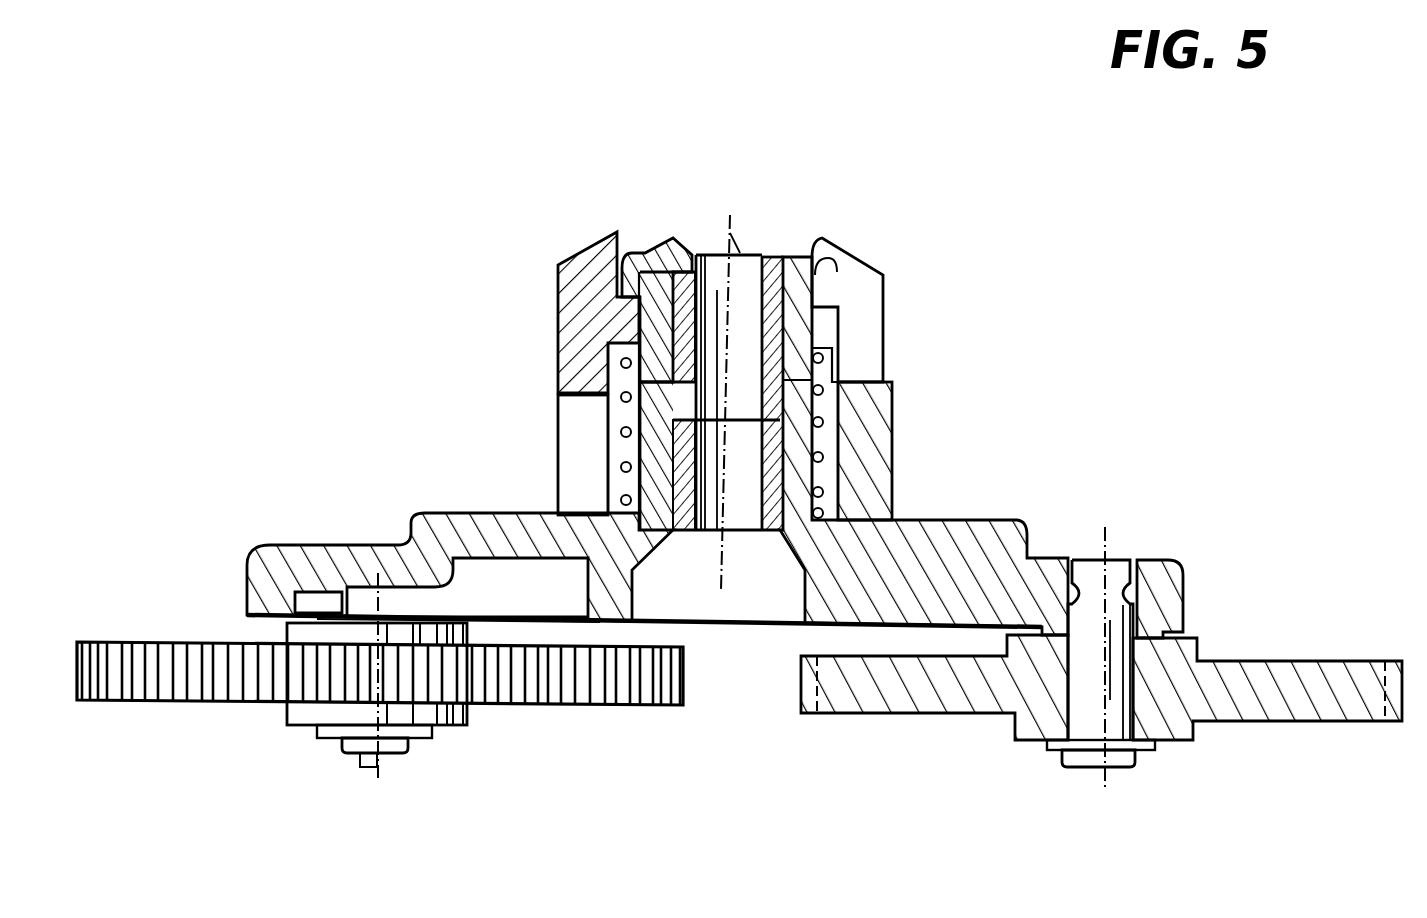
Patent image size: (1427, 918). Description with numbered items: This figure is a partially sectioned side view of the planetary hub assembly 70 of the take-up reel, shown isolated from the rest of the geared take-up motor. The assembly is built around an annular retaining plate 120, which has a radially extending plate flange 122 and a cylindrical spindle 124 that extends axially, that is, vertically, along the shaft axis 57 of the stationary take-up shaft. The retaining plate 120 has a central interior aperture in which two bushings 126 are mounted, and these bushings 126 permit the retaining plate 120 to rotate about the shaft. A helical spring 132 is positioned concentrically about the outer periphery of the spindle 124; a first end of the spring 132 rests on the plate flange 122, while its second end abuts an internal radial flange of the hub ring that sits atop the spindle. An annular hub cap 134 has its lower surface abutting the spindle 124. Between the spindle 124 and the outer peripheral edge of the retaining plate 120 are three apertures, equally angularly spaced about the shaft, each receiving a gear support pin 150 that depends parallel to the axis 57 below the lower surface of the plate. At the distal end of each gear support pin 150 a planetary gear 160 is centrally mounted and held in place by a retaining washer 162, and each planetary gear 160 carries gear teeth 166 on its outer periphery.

The shaft axis 57 is at (728, 212).
The planetary hub assembly 70 is at (351, 329).
The retaining plate 120 is at (940, 557).
The plate flange 122 is at (498, 513).
The spindle 124 is at (795, 252).
The bushings 126 is at (682, 345).
The helical spring 132 is at (813, 388).
The hub cap 134 is at (673, 237).
The gear support pin 150 is at (355, 757).
The planetary gear 160 is at (565, 306).
The retaining washer 162 is at (430, 732).
The gear teeth 166 is at (157, 658).